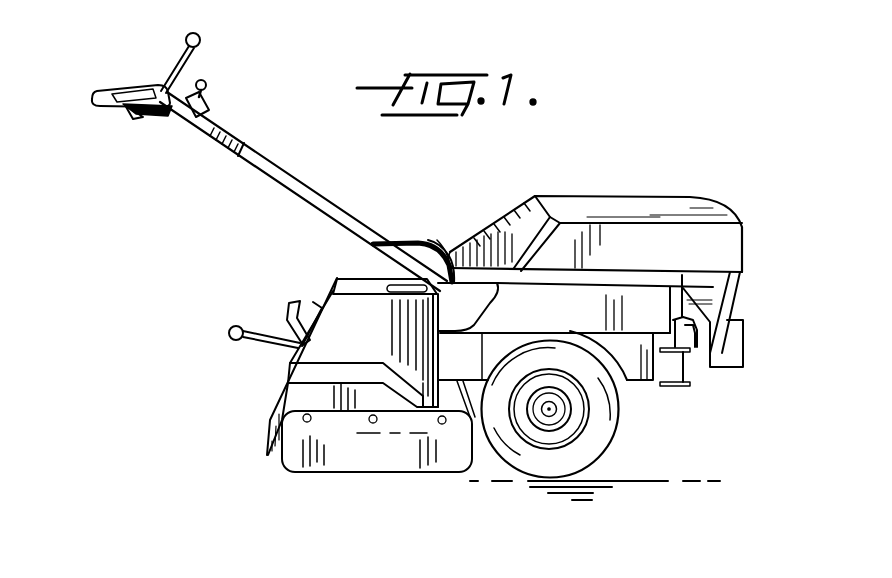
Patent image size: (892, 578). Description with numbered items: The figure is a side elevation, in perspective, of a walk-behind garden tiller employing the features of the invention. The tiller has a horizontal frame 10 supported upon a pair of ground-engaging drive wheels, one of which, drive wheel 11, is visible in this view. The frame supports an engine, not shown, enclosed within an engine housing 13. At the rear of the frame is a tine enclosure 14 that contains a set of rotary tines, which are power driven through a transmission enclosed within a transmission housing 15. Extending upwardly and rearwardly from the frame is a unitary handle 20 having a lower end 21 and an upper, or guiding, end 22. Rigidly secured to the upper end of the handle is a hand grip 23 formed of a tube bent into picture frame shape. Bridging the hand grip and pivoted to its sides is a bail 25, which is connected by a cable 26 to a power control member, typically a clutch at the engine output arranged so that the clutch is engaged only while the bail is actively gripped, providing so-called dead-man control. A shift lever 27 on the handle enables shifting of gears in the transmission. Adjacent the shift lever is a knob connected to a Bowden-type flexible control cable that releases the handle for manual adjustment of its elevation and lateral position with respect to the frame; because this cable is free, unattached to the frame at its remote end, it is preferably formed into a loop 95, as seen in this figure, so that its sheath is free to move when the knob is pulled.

The horizontal frame 10 is at (684, 370).
The ground-engaging drive wheel 11 is at (602, 428).
The engine housing 13 is at (698, 202).
The tine enclosure 14 is at (348, 463).
The transmission housing 15 is at (343, 343).
The unitary handle 20 is at (298, 204).
The lower end of handle 21 is at (455, 276).
The upper end of handle 22 is at (226, 127).
The hand grip 23 is at (106, 93).
The bail 25 is at (137, 113).
The cable 26 is at (158, 122).
The shift lever 27 is at (200, 37).
The loop of Bowden cable 95 is at (398, 243).